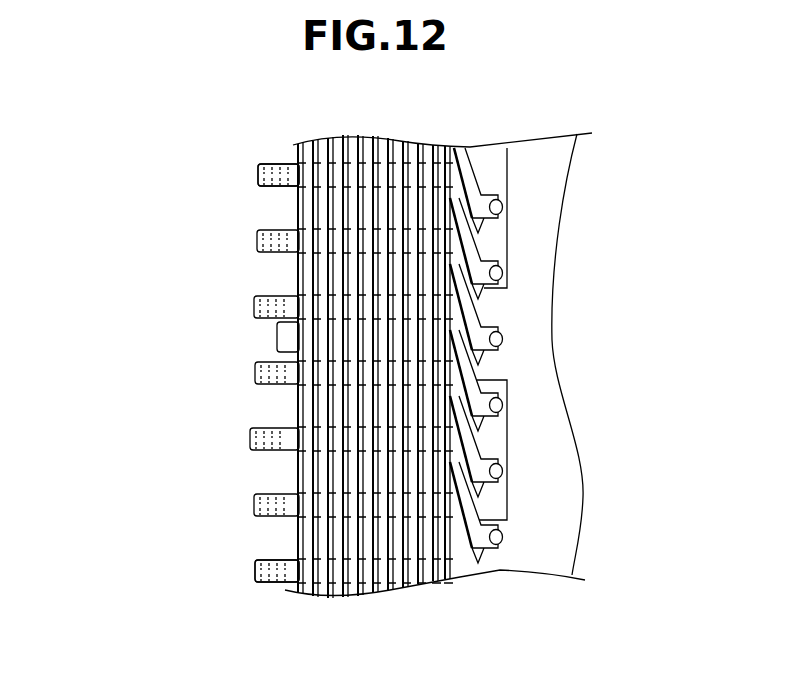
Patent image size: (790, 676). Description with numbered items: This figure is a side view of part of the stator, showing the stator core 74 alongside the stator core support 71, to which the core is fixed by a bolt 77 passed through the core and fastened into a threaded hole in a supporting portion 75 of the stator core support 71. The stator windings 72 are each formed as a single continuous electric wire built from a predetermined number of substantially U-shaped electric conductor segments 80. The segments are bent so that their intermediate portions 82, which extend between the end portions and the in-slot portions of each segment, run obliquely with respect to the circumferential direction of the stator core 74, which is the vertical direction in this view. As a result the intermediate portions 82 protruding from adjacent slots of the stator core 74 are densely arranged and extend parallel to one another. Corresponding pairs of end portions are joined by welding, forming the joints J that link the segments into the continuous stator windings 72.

The stator core support 71 is at (543, 212).
The stator windings 72 is at (255, 302).
The stator core 74 is at (368, 158).
The supporting portion 75 is at (500, 310).
The bolt 77 is at (278, 338).
The electric conductor segments 80 is at (277, 373).
The intermediate portions 82 is at (468, 179).
The joints J is at (500, 533).